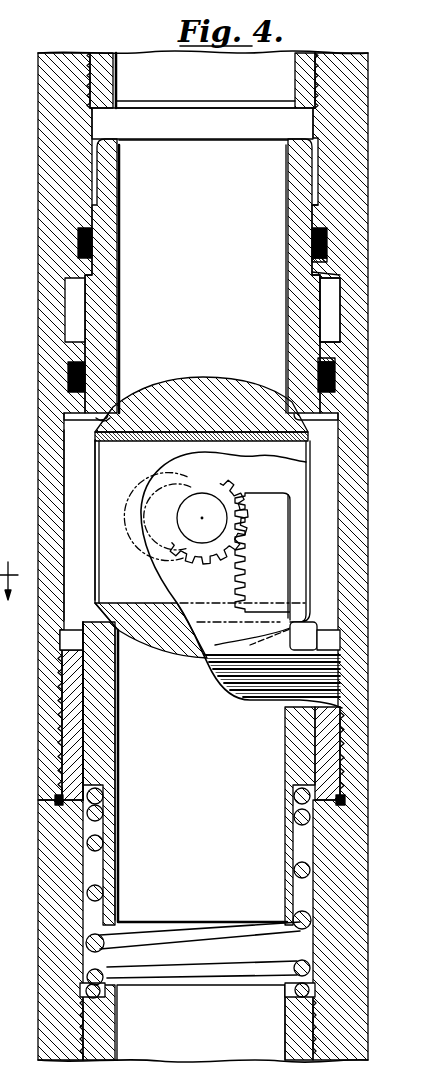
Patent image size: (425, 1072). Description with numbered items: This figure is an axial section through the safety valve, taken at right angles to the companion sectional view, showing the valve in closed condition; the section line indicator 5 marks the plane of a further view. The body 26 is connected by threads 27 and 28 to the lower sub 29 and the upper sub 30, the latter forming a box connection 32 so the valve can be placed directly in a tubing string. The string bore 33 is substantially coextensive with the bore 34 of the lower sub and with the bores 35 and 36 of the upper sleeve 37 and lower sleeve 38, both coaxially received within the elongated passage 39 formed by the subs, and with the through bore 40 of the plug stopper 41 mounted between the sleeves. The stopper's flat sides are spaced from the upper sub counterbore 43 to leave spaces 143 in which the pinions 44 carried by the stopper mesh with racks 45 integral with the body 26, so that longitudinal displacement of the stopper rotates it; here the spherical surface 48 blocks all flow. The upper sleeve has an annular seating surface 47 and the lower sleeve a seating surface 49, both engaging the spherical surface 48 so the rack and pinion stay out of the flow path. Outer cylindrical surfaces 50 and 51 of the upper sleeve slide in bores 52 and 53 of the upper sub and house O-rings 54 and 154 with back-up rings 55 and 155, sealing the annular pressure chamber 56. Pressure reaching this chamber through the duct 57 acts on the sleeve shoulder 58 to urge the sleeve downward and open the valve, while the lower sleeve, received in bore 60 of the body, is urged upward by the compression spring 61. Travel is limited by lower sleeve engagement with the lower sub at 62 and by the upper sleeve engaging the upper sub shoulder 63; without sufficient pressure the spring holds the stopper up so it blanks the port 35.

The section line 5 is at (9, 570).
The body 26 is at (45, 1015).
The threads 27 is at (68, 1066).
The threads 28 is at (60, 760).
The lower sub 29 is at (106, 1030).
The upper sub 30 is at (46, 385).
The box connection 32 is at (296, 80).
The string bore 33 is at (122, 80).
The bore of the lower sub 34 is at (285, 1040).
The bore of the upper sleeve 35 is at (118, 218).
The bore of the lower sleeve 36 is at (118, 758).
The upper sleeve 37 is at (117, 264).
The lower sleeve 38 is at (117, 722).
The elongated passage 39 is at (202, 584).
The through bore 40 is at (255, 440).
The plug stopper 41 is at (195, 436).
The upper sub counterbore 43 is at (66, 446).
The pinions 44 is at (213, 484).
The racks 45 is at (266, 556).
The seating surface 47 is at (99, 420).
The spherical surface 48 is at (147, 396).
The seating surface 49 is at (128, 606).
The outer cylindrical surface 50 is at (312, 222).
The outer cylindrical surface 51 is at (320, 330).
The bore 52 is at (312, 168).
The bore 53 is at (318, 350).
The O-ring 54 is at (312, 245).
The back-up ring 55 is at (312, 256).
The annular pressure chamber 56 is at (329, 310).
The duct 57 is at (184, 556).
The sleeve shoulder 58 is at (318, 270).
The bore 60 is at (315, 762).
The compression spring 61 is at (205, 934).
The lower sub engagement 62 is at (108, 969).
The upper sub shoulder 63 is at (330, 281).
The spaces 143 is at (77, 490).
The O-ring 154 is at (318, 378).
The back-up ring 155 is at (318, 364).